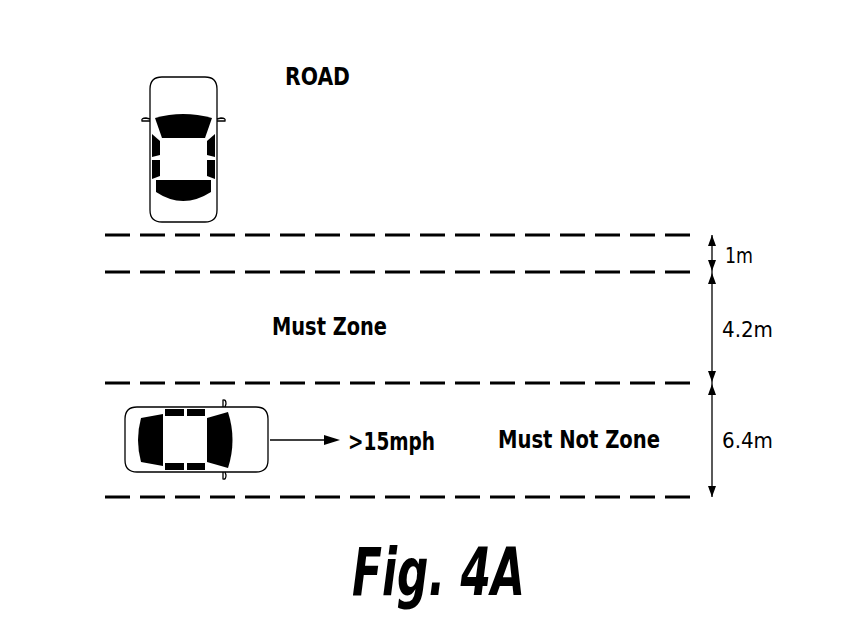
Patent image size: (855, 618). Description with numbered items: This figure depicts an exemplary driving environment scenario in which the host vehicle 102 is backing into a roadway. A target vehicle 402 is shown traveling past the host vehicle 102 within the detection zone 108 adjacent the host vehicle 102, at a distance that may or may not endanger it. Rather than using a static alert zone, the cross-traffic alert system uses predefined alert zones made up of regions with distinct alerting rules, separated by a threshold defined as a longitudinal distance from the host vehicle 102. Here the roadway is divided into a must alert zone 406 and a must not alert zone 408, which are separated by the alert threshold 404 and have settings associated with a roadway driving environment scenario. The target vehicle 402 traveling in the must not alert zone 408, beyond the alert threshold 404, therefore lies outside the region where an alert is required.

The host vehicle 102 is at (193, 92).
The detection zone 108 is at (411, 373).
The target vehicle 402 is at (190, 472).
The alert threshold 404 is at (660, 383).
The must alert zone 406 is at (660, 328).
The must not alert zone 408 is at (690, 465).